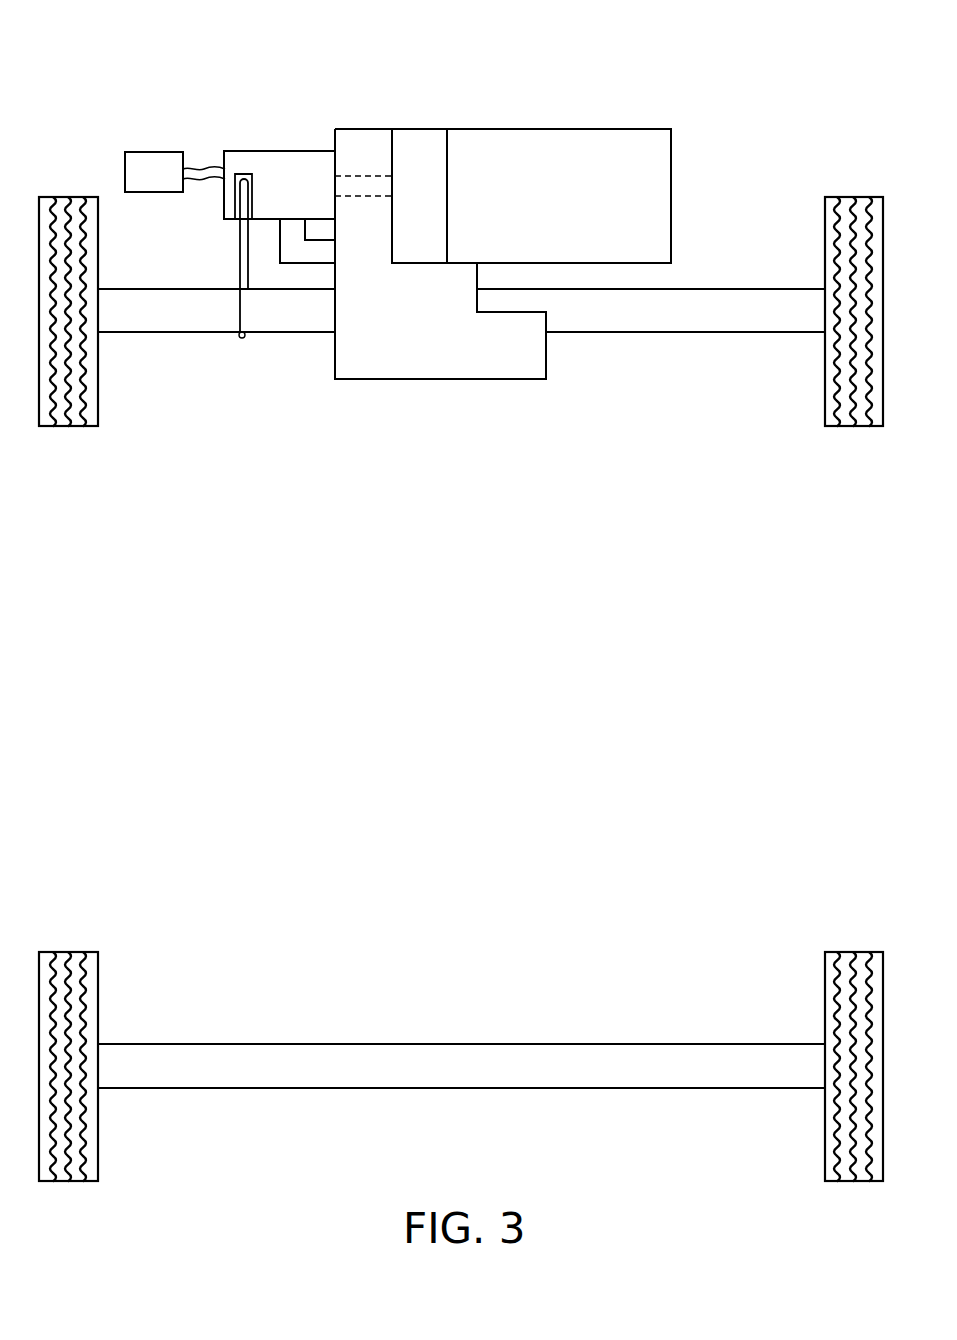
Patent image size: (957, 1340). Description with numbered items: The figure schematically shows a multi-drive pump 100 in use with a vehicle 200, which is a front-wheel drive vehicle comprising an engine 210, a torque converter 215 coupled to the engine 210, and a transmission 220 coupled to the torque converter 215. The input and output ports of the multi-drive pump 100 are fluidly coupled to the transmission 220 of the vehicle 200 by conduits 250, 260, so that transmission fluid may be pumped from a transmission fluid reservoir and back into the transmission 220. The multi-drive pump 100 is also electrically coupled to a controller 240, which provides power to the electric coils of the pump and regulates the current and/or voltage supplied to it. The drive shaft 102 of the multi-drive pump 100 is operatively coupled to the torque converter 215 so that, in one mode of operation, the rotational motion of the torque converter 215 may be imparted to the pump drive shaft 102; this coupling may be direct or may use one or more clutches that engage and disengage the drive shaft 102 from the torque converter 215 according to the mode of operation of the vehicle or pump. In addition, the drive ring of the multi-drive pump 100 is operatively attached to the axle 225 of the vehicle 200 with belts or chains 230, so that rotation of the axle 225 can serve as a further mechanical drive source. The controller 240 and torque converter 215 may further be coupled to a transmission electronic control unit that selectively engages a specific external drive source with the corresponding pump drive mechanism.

The vehicle 200 is at (720, 84).
The multi-drive pump 100 is at (262, 151).
The drive shaft 102 is at (365, 197).
The engine 210 is at (560, 129).
The torque converter 215 is at (423, 129).
The transmission 220 is at (458, 381).
The axle 225 is at (668, 333).
The belts 230 is at (240, 252).
The controller 240 is at (153, 152).
The conduit 250 is at (284, 265).
The conduit 260 is at (322, 241).